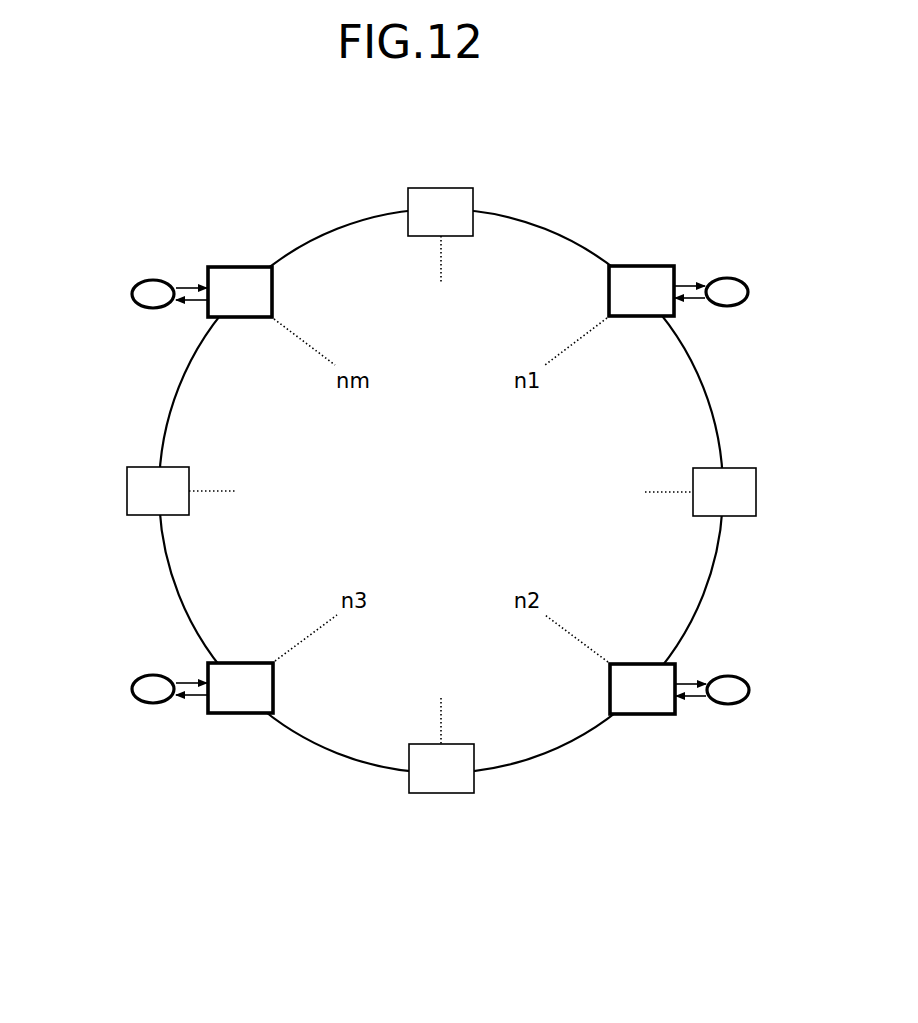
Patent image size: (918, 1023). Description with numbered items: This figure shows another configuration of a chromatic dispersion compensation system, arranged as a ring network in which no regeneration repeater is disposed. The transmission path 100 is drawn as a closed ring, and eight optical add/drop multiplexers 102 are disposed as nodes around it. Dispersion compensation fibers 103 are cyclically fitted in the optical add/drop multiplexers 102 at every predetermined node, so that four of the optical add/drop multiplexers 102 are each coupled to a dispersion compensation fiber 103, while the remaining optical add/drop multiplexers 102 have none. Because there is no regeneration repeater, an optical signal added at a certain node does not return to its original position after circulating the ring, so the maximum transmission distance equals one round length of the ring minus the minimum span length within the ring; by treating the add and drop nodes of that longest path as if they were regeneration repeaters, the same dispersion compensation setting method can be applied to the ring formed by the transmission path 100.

The transmission path 100 is at (548, 228).
The optical add/drop multiplexer 102 is at (420, 188).
The dispersion compensation fiber 103 is at (132, 294).